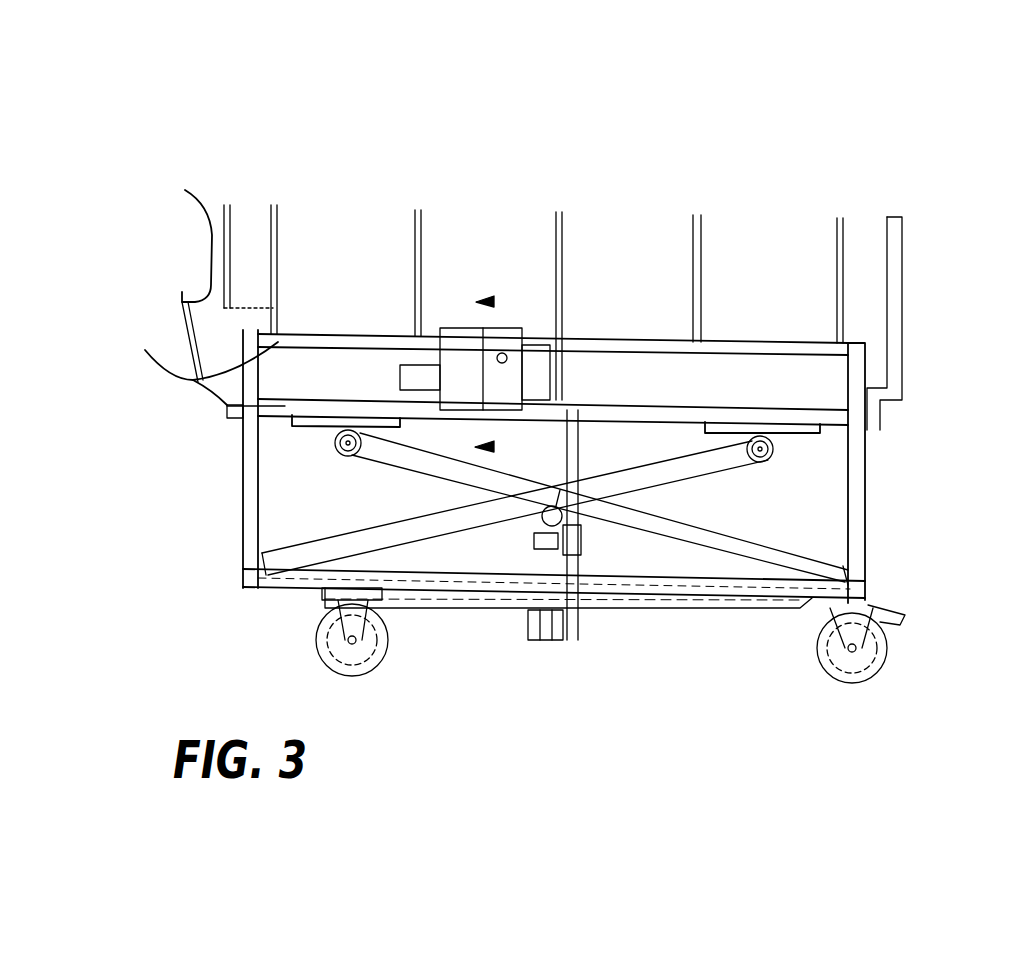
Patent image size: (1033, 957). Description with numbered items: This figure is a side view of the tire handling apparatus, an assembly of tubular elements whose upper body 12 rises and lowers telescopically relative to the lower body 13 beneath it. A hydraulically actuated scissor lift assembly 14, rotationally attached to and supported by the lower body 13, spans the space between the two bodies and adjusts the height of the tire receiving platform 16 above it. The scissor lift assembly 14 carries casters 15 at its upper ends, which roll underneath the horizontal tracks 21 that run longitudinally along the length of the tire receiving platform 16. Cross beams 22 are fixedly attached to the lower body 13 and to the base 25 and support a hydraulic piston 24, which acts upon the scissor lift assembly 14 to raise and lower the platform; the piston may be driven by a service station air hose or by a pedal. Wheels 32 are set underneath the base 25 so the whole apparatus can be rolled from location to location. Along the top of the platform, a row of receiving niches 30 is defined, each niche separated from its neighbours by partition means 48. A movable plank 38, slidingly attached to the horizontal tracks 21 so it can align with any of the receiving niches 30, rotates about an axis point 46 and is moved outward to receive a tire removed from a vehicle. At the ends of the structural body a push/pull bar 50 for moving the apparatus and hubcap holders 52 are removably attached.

The upper body 12 is at (950, 334).
The lower body 13 is at (178, 464).
The scissor lift assembly 14 is at (493, 524).
The casters 15 is at (350, 460).
The tire receiving platform 16 is at (755, 342).
The horizontal tracks 21 is at (197, 377).
The cross beams 22 is at (530, 636).
The hydraulic piston 24 is at (575, 557).
The base 25 is at (736, 598).
The receiving niches 30 is at (733, 215).
The wheels 32 is at (357, 680).
The movable plank 38 is at (505, 338).
The axis point 46 is at (462, 320).
The partition means 48 is at (413, 253).
The push/pull bar 50 is at (902, 265).
The hubcap holders 52 is at (222, 225).